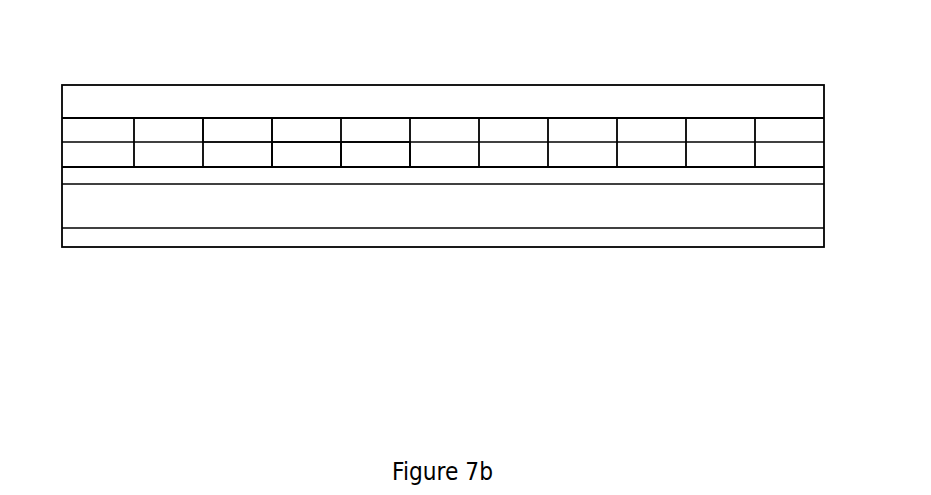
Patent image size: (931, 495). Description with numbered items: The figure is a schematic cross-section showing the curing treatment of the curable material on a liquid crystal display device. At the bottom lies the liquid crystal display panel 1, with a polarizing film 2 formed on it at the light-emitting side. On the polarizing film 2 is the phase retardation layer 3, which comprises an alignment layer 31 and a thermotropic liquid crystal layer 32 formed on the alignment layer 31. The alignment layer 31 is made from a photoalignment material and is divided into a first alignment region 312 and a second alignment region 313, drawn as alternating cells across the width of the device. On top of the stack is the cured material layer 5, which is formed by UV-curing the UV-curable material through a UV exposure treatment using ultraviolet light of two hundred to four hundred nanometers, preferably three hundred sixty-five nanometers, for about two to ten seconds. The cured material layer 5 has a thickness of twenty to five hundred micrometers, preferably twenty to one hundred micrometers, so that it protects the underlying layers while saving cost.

The liquid crystal display panel 1 is at (521, 200).
The polarizing film 2 is at (441, 175).
The phase retardation layer 3 is at (297, 342).
The cured material layer 5 is at (673, 108).
The alignment layer 31 is at (342, 290).
The thermotropic liquid crystal layer 32 is at (243, 127).
The first alignment region 312 is at (380, 152).
The second alignment region 313 is at (302, 153).